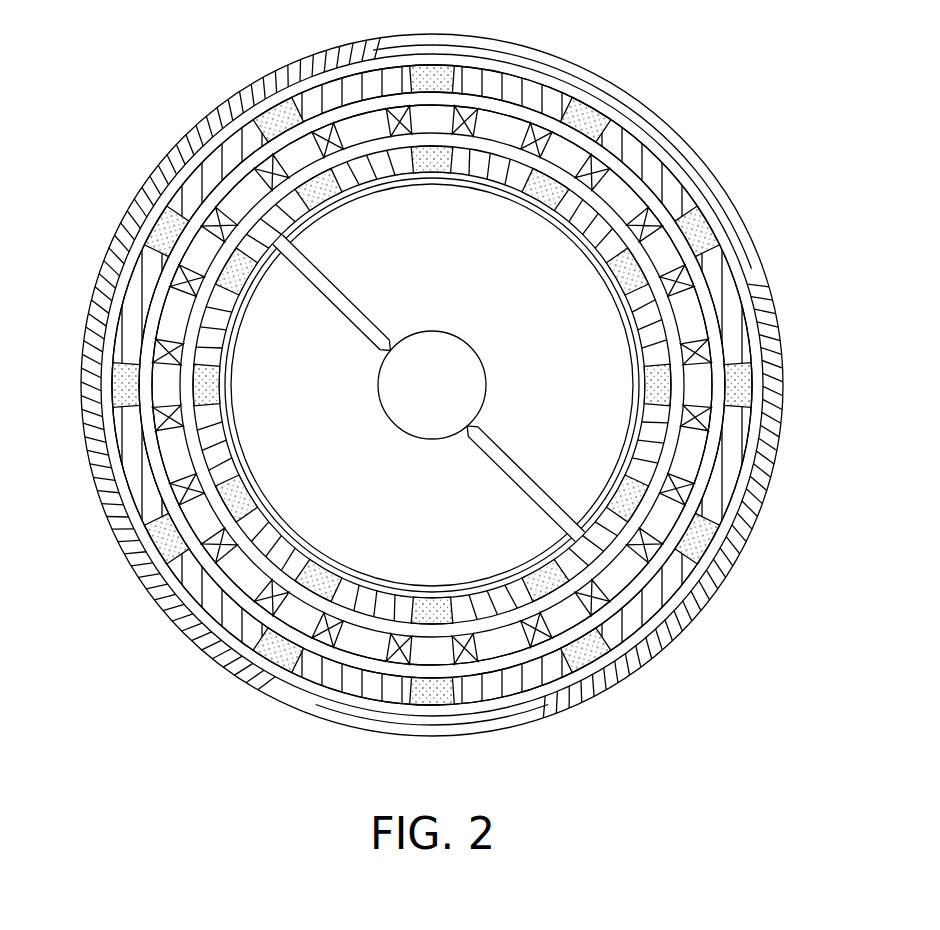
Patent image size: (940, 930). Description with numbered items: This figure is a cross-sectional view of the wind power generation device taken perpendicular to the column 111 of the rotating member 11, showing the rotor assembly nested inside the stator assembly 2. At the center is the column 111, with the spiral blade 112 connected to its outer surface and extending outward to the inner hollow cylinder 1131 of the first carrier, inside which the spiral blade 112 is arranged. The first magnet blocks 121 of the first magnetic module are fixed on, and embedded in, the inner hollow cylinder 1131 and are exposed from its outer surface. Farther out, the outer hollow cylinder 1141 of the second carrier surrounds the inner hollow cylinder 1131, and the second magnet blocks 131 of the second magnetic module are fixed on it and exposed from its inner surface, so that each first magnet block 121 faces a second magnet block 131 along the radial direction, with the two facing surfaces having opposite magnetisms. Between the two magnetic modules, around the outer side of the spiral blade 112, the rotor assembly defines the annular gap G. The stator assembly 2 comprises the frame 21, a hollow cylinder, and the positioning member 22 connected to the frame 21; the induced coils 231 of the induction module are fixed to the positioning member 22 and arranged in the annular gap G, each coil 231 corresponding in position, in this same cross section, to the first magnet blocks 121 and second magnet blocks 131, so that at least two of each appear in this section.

The rotating member 11 is at (520, 385).
The column 111 is at (458, 381).
The spiral blade 112 is at (552, 352).
The inner hollow cylinder 1131 is at (660, 417).
The outer hollow cylinder 1141 is at (735, 342).
The first magnet blocks 121 is at (593, 197).
The stator assembly 2 is at (466, 368).
The frame 21 is at (650, 577).
The positioning member 22 is at (625, 578).
The annular gap G is at (507, 100).
The second magnet blocks 131 is at (589, 110).
The induced coils 231 is at (637, 130).